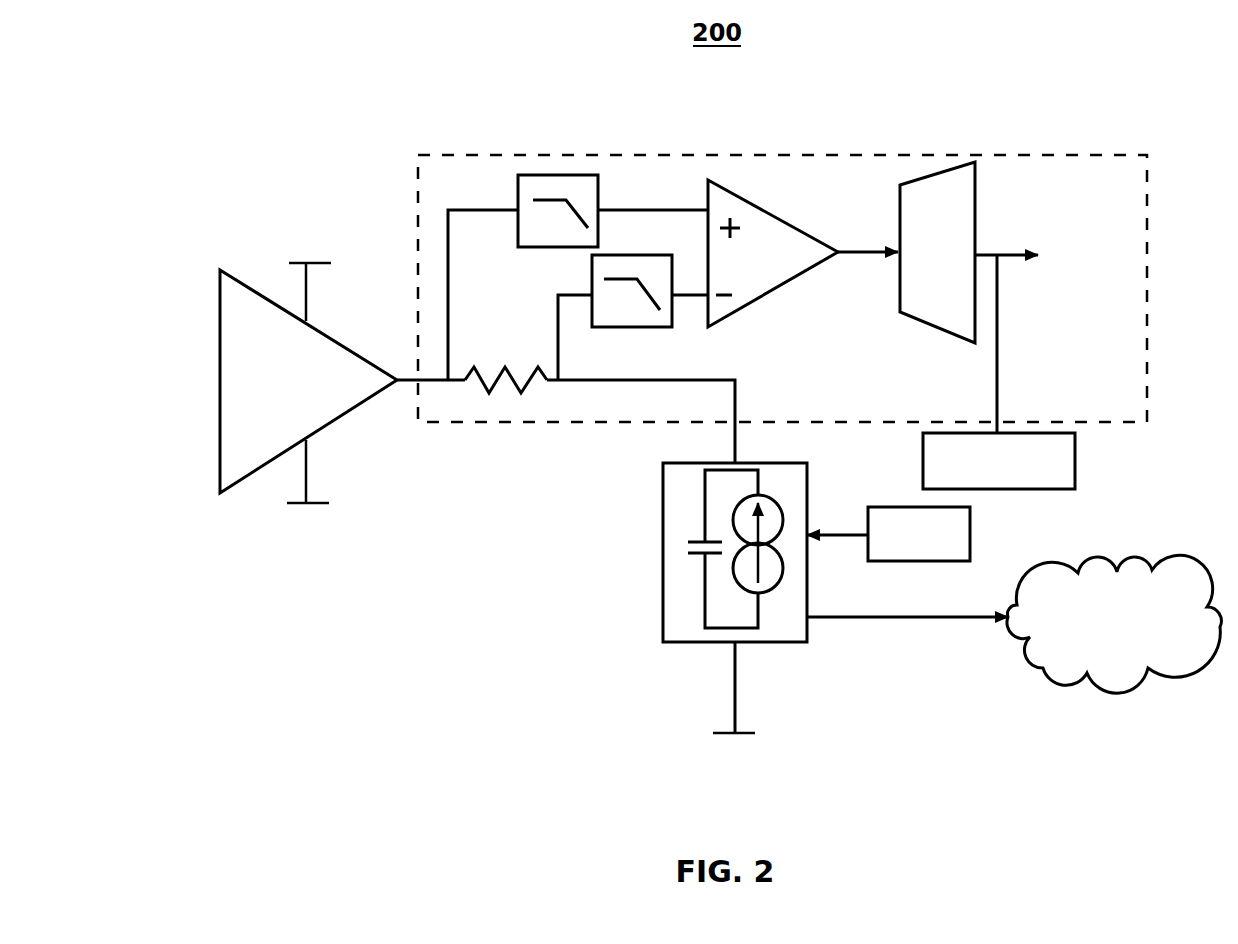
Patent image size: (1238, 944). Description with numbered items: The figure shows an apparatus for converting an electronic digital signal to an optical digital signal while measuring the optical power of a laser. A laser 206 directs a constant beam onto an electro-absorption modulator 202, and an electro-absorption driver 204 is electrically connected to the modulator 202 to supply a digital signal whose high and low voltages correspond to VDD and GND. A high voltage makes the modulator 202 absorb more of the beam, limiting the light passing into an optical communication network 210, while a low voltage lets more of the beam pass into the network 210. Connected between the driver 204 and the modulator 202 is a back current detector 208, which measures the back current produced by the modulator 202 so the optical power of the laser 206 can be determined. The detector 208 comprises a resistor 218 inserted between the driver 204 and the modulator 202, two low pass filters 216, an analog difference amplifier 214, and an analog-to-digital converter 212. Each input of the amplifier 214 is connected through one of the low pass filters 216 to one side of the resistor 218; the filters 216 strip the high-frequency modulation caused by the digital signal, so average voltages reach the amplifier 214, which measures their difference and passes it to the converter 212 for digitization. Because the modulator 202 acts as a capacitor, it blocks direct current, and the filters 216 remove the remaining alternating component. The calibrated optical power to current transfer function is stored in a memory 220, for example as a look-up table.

The electro-absorption modulator 202 is at (808, 488).
The electro-absorption driver 204 is at (220, 363).
The laser 206 is at (972, 536).
The back current detector 208 is at (1066, 145).
The optical communication network 210 is at (1062, 678).
The analog-to-digital converter 212 is at (978, 189).
The analog difference amplifier 214 is at (803, 253).
The low pass filters 216 is at (633, 255).
The resistor 218 is at (500, 348).
The memory 220 is at (1078, 461).